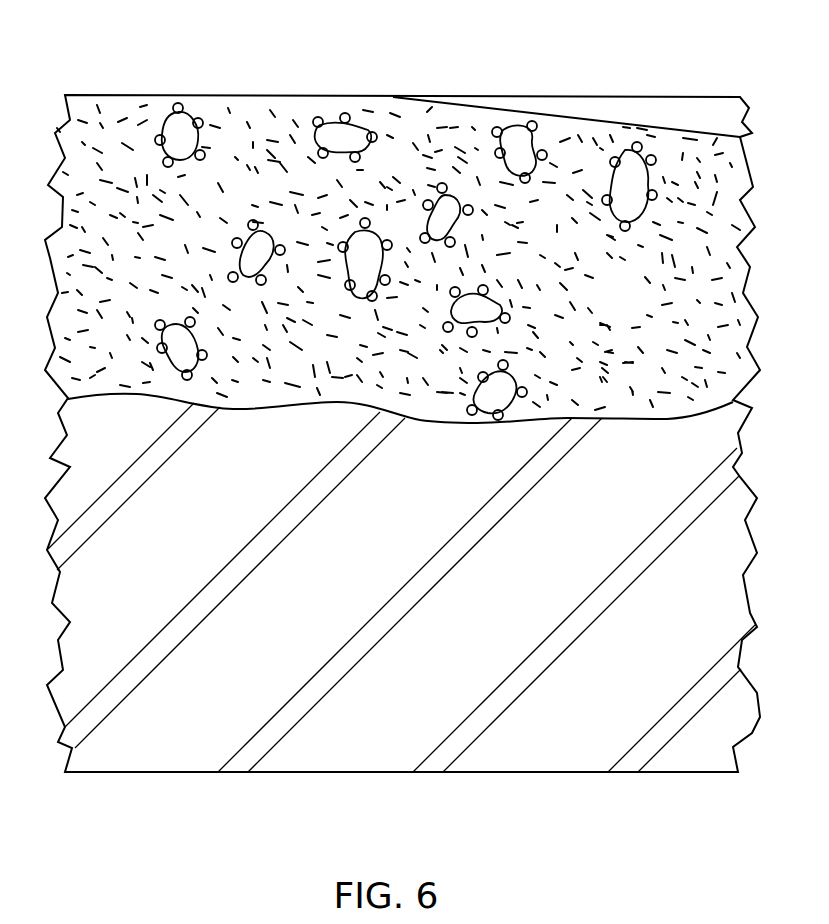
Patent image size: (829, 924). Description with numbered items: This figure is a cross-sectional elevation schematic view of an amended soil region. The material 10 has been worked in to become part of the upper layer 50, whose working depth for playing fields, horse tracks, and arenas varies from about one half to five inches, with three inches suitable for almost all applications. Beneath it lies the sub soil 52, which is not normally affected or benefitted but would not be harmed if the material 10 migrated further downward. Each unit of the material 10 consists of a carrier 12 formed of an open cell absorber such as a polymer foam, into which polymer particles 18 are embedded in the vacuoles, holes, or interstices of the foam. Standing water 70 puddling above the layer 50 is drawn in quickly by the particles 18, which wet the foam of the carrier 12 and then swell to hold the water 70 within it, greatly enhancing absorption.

The material 10 is at (577, 103).
The carrier 12 is at (532, 144).
The particles 18 is at (543, 152).
The layer 50 is at (608, 312).
The sub soil 52 is at (333, 572).
The standing water 70 is at (698, 127).